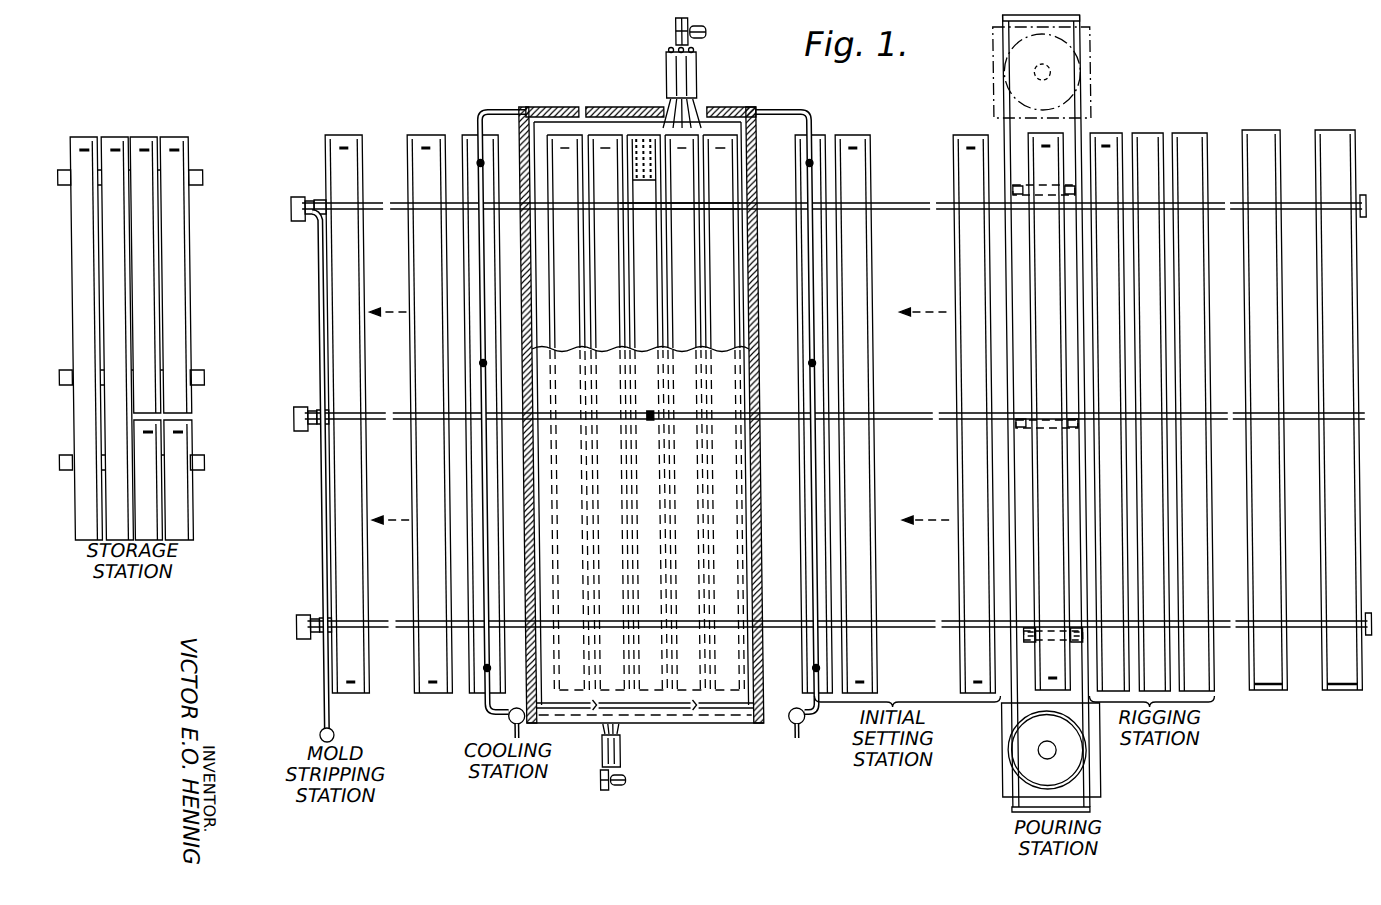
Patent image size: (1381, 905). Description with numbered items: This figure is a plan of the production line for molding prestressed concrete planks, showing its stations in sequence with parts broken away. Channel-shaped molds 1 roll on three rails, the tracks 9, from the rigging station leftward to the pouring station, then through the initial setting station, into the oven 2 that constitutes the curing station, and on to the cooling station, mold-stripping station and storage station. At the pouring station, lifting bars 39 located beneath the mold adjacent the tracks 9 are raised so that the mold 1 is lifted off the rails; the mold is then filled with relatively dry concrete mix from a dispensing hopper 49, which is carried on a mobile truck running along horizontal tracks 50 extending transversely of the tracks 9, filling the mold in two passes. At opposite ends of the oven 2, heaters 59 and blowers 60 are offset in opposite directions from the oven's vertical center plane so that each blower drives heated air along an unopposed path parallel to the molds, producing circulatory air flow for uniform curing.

The mold 1 is at (1332, 690).
The oven 2 is at (648, 582).
The tracks 9 is at (900, 209).
The lifting bars 39 is at (1020, 645).
The dispensing hopper 49 is at (1086, 62).
The horizontal tracks 50 is at (1005, 110).
The heaters 59 is at (668, 76).
The blowers 60 is at (678, 34).